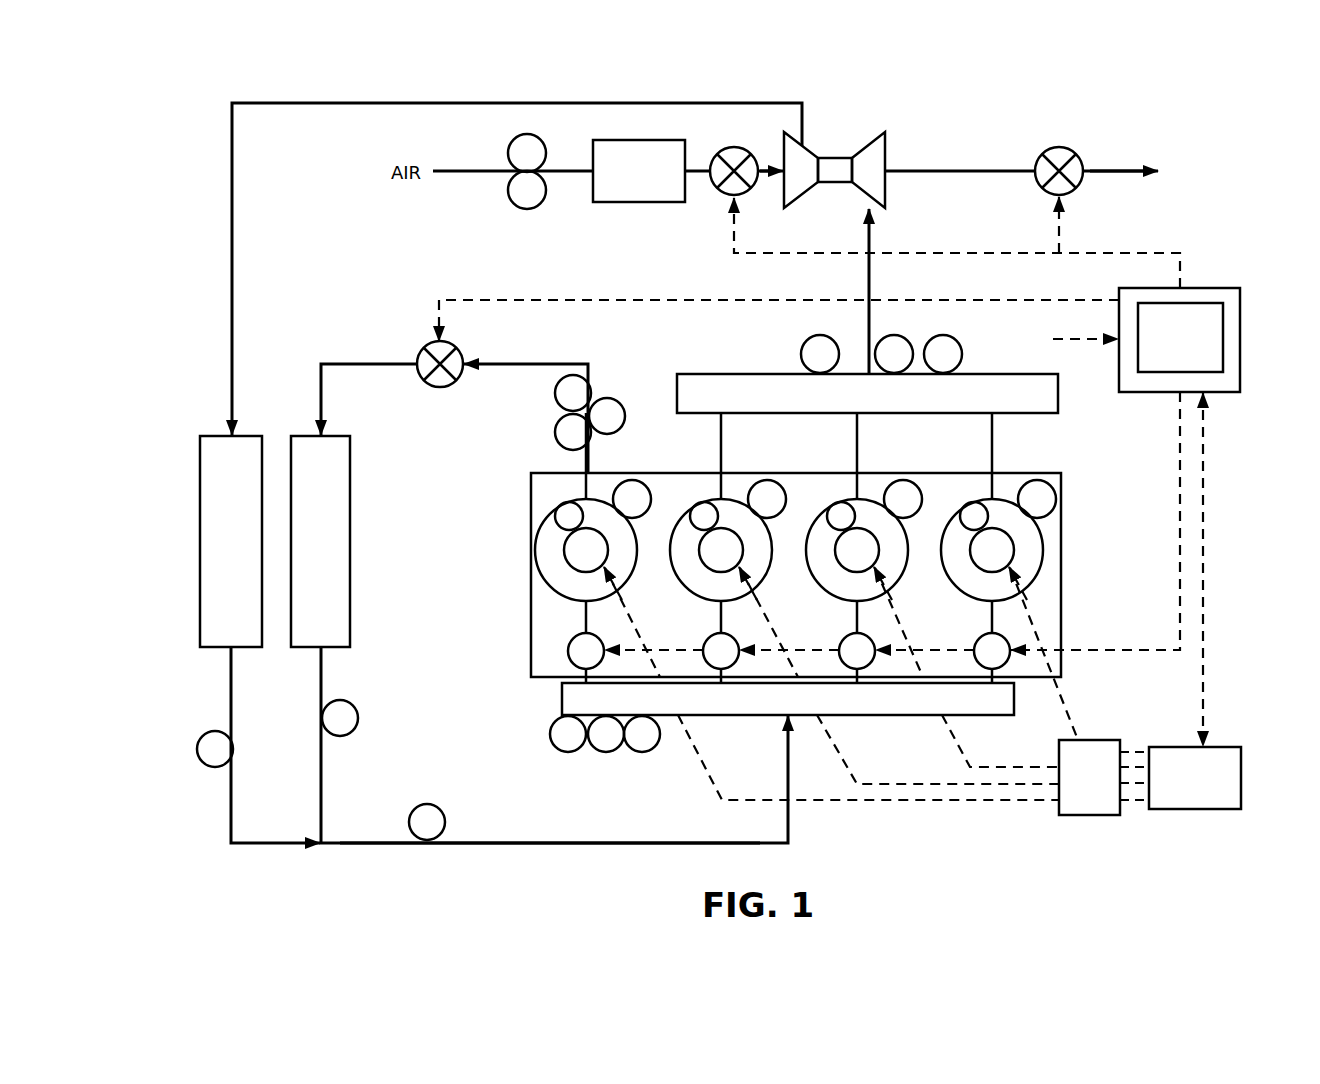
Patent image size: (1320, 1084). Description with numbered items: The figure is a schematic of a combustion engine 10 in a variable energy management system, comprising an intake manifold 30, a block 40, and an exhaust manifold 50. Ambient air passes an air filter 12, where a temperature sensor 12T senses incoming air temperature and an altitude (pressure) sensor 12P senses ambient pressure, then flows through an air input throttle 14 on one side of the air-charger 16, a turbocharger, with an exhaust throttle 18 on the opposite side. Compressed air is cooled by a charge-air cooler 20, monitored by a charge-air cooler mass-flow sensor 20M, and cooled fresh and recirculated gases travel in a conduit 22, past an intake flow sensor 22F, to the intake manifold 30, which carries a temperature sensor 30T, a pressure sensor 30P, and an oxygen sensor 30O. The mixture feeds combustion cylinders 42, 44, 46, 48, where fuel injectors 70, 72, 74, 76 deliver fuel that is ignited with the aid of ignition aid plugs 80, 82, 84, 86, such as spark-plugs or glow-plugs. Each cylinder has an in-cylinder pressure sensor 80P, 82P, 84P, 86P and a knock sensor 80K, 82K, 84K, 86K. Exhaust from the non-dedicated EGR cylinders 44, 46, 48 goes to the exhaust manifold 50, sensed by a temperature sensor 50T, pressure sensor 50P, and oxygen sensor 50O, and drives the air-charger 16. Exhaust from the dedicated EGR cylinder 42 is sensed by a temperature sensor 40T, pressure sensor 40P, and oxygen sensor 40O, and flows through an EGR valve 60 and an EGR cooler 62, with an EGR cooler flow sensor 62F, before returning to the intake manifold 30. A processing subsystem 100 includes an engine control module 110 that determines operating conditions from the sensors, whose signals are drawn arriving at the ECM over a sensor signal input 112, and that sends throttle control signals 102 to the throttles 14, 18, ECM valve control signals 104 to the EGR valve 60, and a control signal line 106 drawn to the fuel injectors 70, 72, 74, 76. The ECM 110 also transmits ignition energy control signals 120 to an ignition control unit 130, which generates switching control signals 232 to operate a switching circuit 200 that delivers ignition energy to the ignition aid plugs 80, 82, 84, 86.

The combustion engine 10 is at (1130, 138).
The air filter 12 is at (626, 203).
The temperature sensor 12T is at (508, 152).
The altitude (pressure) sensor 12P is at (508, 190).
The air input throttle 14 is at (712, 196).
The air-charger 16 is at (833, 183).
The exhaust throttle 18 is at (1038, 187).
The charge-air cooler 20 is at (254, 434).
The charge-air cooler mass-flow sensor 20M is at (197, 749).
The conduit 22 is at (371, 843).
The intake manifold intake flow sensor 22F is at (426, 803).
The intake manifold 30 is at (562, 698).
The temperature sensor 30T is at (565, 753).
The intake manifold pressure sensor 30P is at (604, 753).
The intake manifold oxygen sensor 30O is at (641, 753).
The block 40 is at (531, 508).
The temperature sensor 40T is at (555, 393).
The dedicated EGR exhaust pressure sensor 40P is at (555, 432).
The oxygen sensor 40O is at (609, 398).
The combustion cylinder 42 is at (552, 593).
The combustion cylinder 44 is at (703, 592).
The combustion cylinder 46 is at (830, 592).
The combustion cylinder 48 is at (966, 592).
The exhaust manifold 50 is at (706, 374).
The temperature sensor 50T is at (805, 345).
The exhaust manifold pressure sensor 50P is at (903, 338).
The exhaust manifold oxygen sensor 50O is at (959, 348).
The exhaust gas recirculation (EGR) valve 60 is at (424, 348).
The EGR cooler 62 is at (341, 434).
The EGR cooler flow sensor 62F is at (358, 718).
The fuel injector 70 is at (586, 651).
The fuel injector 72 is at (721, 651).
The fuel injector 74 is at (857, 651).
The fuel injector 76 is at (992, 651).
The ignition aid plug 80 is at (586, 550).
The ignition aid plug 82 is at (721, 550).
The ignition aid plug 84 is at (857, 550).
The ignition aid plug 86 is at (992, 550).
The pressure sensor 80P is at (563, 502).
The pressure sensor 82P is at (703, 502).
The pressure sensor 84P is at (840, 502).
The pressure sensor 86P is at (974, 502).
The knock sensor 80K is at (638, 480).
The knock sensor 82K is at (771, 480).
The knock sensor 84K is at (901, 480).
The knock sensor 86K is at (1034, 480).
The processing subsystem 100 is at (1226, 288).
The engine control module 110 is at (1180, 337).
The throttle control signals 102 is at (1130, 253).
The ECM valve control signals 104 is at (494, 300).
The fuel injector control signal line 106 is at (1103, 650).
The sensor input line 112 is at (1073, 330).
The ignition energy control signals 120 is at (1205, 545).
The ignition control unit 130 is at (1222, 747).
The switching circuit 200 is at (862, 691).
The switching control signals 232 is at (1143, 802).